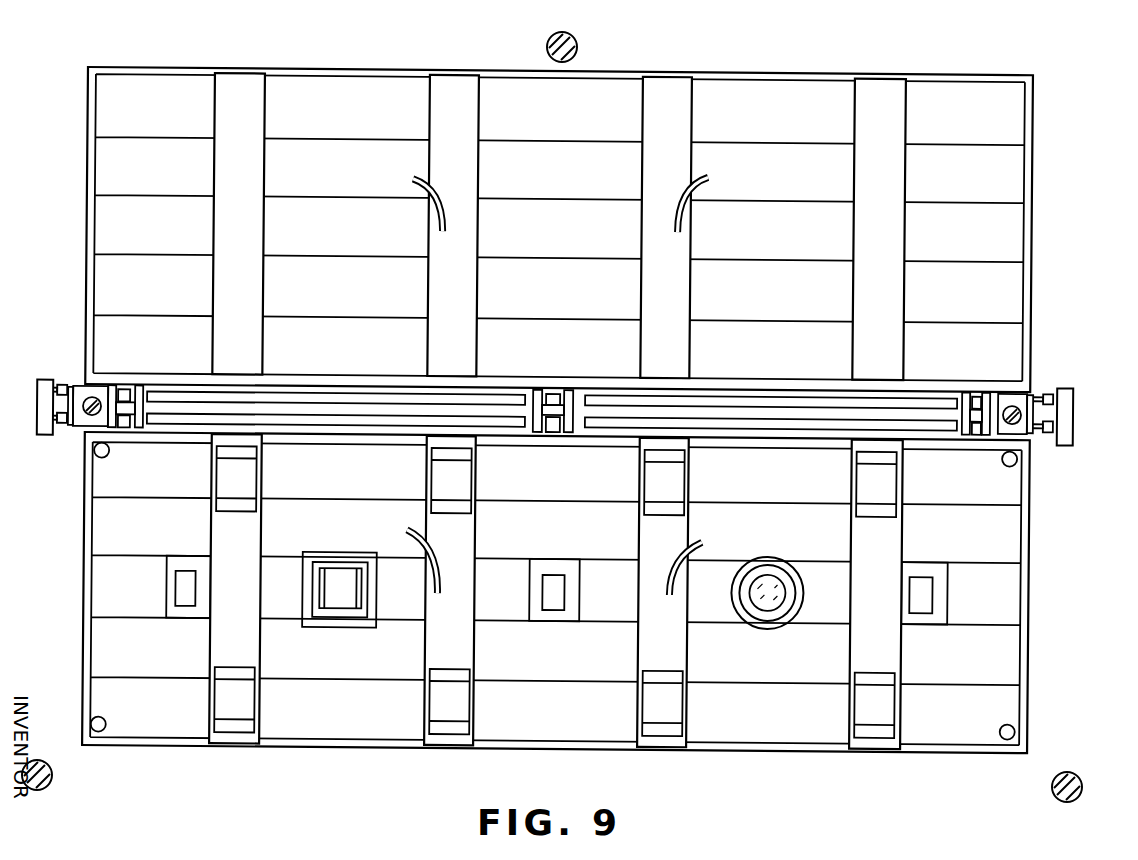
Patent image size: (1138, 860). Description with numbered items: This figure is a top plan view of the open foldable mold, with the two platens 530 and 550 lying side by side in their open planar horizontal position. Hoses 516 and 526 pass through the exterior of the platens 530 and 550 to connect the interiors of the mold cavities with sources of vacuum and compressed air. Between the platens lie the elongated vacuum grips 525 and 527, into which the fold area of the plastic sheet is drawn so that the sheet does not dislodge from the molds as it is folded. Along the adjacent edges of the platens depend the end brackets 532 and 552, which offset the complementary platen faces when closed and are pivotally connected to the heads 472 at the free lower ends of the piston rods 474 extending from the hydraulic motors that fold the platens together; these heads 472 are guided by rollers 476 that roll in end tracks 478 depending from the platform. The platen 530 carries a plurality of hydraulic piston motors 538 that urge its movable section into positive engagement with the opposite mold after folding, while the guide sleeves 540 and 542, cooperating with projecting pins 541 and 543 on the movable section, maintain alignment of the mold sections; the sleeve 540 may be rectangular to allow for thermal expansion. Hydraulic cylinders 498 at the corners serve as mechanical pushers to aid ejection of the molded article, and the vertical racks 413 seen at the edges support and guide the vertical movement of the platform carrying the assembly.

The vertical rack 413 is at (547, 44).
The platen 550 is at (576, 234).
The platen 530 is at (575, 491).
The hose 526 is at (413, 180).
The hose 516 is at (432, 548).
The hydraulic piston motor 538 is at (258, 470).
The hydraulic cylinder 498 is at (106, 456).
The guide sleeve 540 is at (340, 613).
The projecting pin 541 is at (337, 577).
The guide sleeve 542 is at (768, 618).
The projecting pin 543 is at (757, 585).
The head 472 is at (540, 392).
The end bracket 552 is at (122, 390).
The end bracket 532 is at (122, 430).
The vacuum grip 527 is at (182, 395).
The vacuum grip 525 is at (188, 417).
The piston rod 474 is at (90, 400).
The roller 476 is at (65, 388).
The end track 478 is at (38, 393).